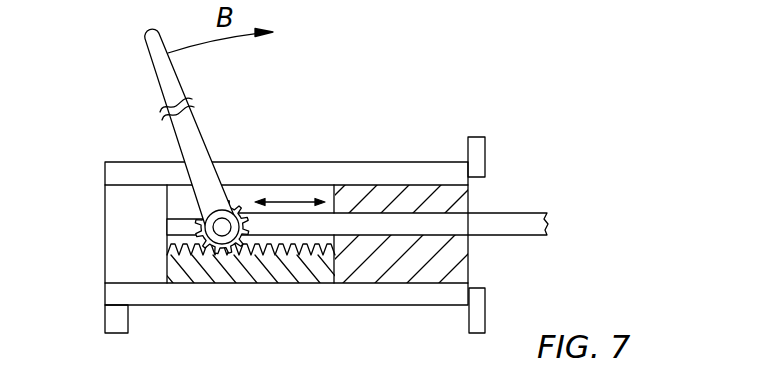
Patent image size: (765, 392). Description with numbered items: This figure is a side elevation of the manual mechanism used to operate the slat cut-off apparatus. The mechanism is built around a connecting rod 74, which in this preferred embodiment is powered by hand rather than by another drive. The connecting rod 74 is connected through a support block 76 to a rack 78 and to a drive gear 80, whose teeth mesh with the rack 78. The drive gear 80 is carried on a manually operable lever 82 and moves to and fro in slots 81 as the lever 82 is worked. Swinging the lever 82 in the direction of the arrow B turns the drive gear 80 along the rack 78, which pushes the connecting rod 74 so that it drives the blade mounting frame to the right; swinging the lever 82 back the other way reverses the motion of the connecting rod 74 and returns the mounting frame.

The connecting rod 74 is at (507, 236).
The support block 76 is at (397, 268).
The rack 78 is at (272, 270).
The drive gear 80 is at (242, 215).
The slots 81 is at (185, 219).
The manually operable lever 82 is at (207, 130).